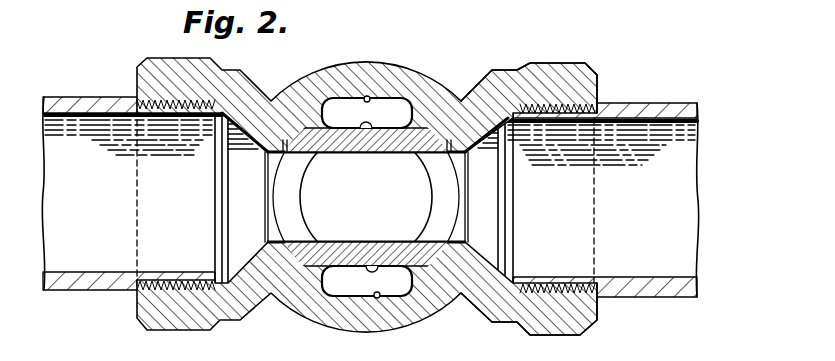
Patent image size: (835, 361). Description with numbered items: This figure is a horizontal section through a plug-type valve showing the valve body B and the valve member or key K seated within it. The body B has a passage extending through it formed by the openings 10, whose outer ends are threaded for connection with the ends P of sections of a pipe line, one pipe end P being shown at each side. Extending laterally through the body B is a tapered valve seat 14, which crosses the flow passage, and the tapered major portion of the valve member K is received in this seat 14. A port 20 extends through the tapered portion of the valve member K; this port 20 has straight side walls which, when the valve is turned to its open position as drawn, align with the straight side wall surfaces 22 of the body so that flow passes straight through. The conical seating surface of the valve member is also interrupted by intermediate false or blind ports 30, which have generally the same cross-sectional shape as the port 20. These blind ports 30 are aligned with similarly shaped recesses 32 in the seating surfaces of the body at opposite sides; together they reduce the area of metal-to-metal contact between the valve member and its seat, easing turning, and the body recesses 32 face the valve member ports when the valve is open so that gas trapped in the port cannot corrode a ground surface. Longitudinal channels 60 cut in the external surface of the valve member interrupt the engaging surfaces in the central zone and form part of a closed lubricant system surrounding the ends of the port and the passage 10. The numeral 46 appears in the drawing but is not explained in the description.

The pipe P is at (92, 283).
The valve body coupling 10 is at (250, 306).
The nut 14 is at (473, 282).
The nut body B is at (598, 74).
The ball 20 is at (350, 236).
The seat ring 22 is at (283, 146).
The ball detent 30 is at (369, 131).
The groove 32 is at (368, 96).
The seat flange 60 is at (304, 126).
The key K is at (342, 262).
The stem 46 is at (388, 6).